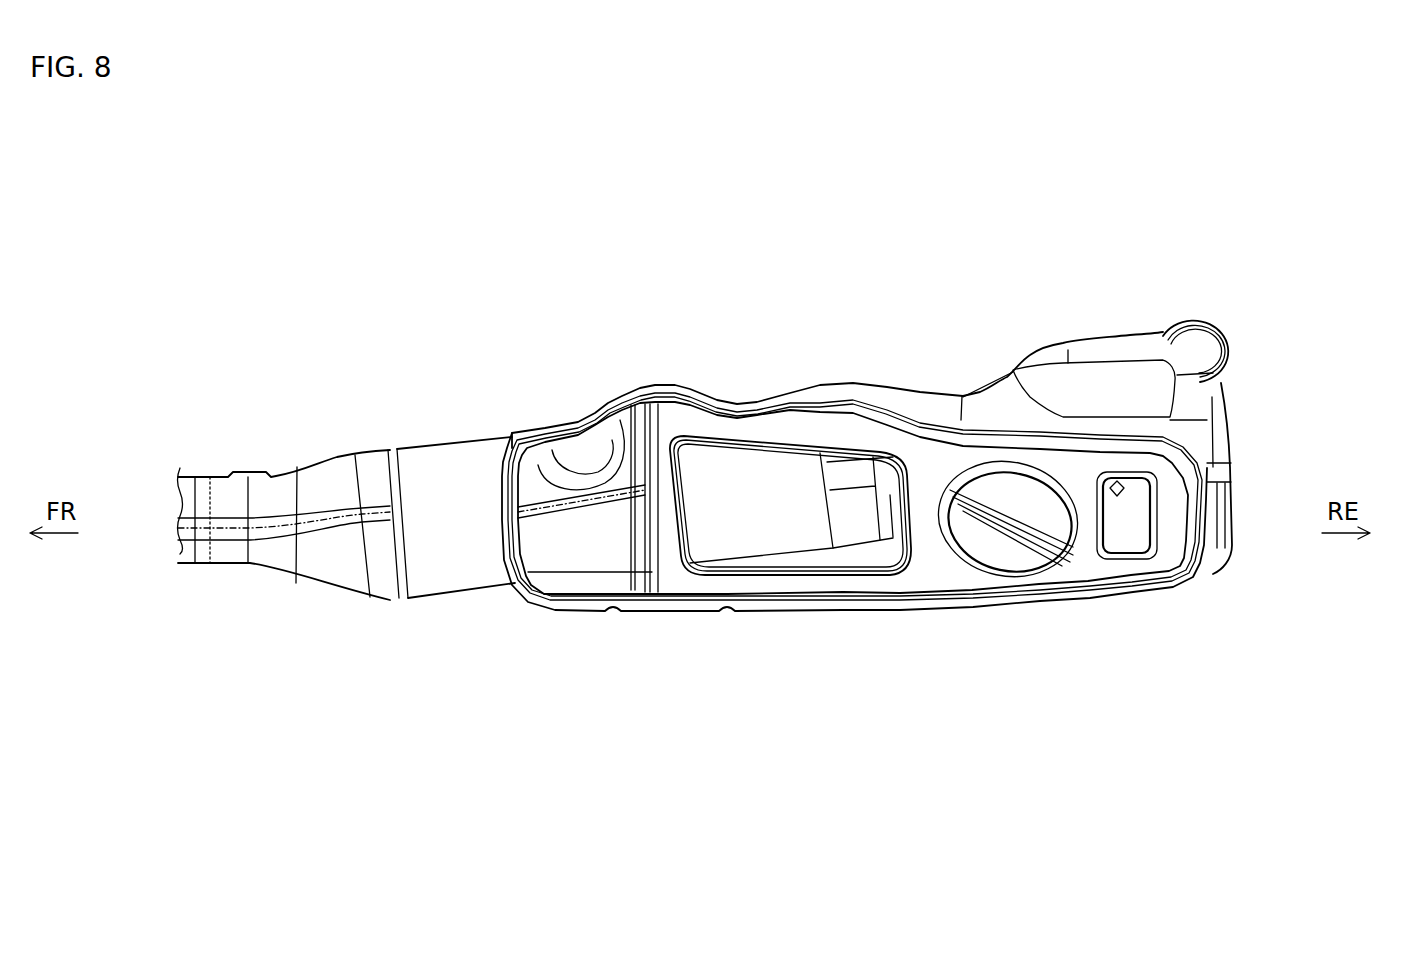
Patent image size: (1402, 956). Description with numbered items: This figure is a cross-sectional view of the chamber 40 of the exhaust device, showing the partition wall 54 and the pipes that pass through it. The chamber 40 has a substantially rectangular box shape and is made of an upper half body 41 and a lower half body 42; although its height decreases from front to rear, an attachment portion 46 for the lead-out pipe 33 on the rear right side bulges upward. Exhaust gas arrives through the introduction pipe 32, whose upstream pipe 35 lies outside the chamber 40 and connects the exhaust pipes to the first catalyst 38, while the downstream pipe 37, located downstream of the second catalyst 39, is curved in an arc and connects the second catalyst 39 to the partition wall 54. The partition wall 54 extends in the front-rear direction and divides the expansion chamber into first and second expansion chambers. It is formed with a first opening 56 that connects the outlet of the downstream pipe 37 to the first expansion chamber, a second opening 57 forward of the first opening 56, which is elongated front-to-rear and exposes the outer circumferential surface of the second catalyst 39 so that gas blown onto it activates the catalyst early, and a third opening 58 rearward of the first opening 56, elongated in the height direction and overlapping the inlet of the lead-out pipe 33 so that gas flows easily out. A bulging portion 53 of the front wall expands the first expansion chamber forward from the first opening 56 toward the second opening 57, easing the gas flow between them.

The introduction pipe 32 is at (509, 394).
The lead-out pipe 33 is at (1198, 320).
The upstream pipe 35 is at (318, 477).
The downstream pipe 37 is at (863, 527).
The first catalyst 38 is at (447, 452).
The second catalyst 39 is at (738, 458).
The chamber 40 is at (1307, 413).
The upper half body 41 is at (1230, 443).
The lower half body 42 is at (1233, 513).
The attachment portion 46 is at (1103, 338).
The bulging portion 53 is at (512, 553).
The partition wall 54 is at (930, 573).
The first opening 56 is at (1010, 548).
The second opening 57 is at (785, 558).
The third opening 58 is at (1133, 538).